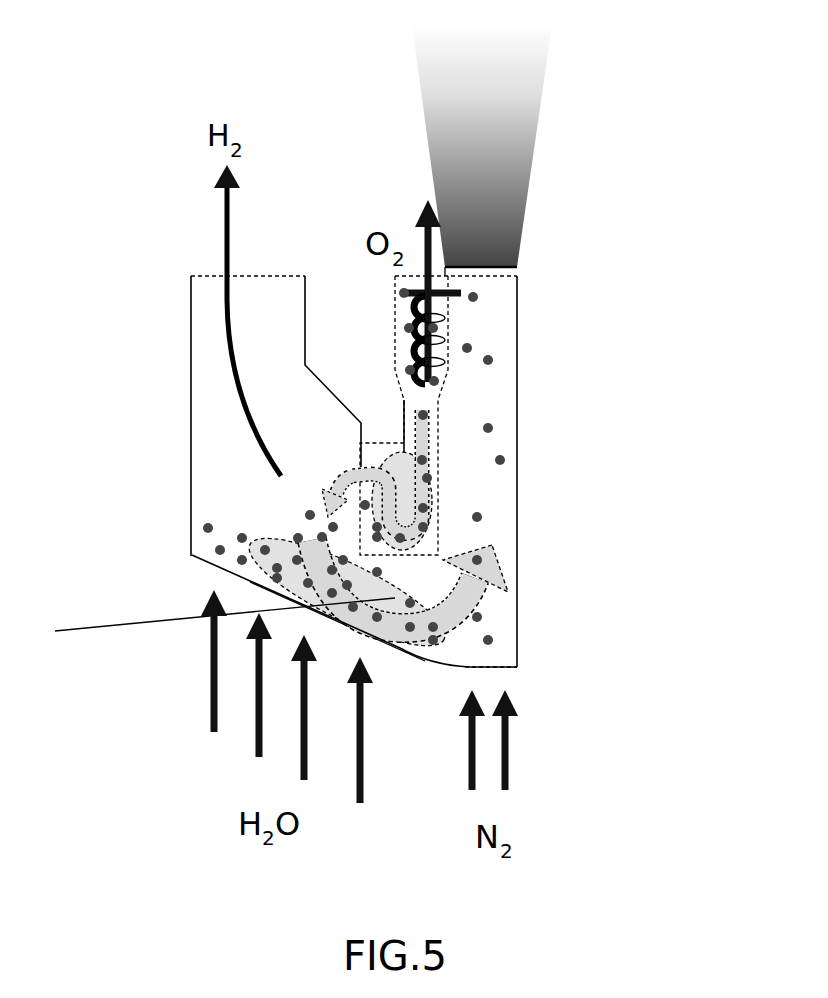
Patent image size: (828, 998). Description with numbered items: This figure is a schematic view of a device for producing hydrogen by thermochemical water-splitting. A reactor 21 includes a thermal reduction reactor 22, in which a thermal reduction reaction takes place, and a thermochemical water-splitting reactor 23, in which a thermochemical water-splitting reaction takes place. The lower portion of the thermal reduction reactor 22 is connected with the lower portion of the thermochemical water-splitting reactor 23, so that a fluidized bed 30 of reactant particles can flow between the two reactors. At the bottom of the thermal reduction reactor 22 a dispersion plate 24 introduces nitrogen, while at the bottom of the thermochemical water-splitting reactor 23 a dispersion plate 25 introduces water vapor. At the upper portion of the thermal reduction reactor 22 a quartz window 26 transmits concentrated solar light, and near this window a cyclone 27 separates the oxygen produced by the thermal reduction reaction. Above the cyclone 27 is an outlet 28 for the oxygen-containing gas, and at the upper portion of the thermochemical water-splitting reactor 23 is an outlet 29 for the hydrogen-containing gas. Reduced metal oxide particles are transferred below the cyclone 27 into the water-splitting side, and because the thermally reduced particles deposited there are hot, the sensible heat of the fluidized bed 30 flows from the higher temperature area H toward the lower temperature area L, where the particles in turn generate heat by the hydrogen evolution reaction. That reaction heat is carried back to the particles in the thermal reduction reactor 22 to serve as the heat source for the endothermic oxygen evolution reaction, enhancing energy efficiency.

The reactor 21 is at (543, 361).
The thermal reduction reactor 22 is at (518, 413).
The thermochemical water-splitting reactor 23 is at (197, 427).
The dispersion plate 24 is at (487, 660).
The dispersion plate 25 is at (250, 582).
The quartz window 26 is at (512, 272).
The cyclone 27 is at (395, 312).
The outlet 28 is at (395, 278).
The outlet 29 is at (204, 282).
The fluidized bed 30 is at (490, 548).
The higher temperature area H is at (428, 485).
The lower temperature area L is at (214, 621).